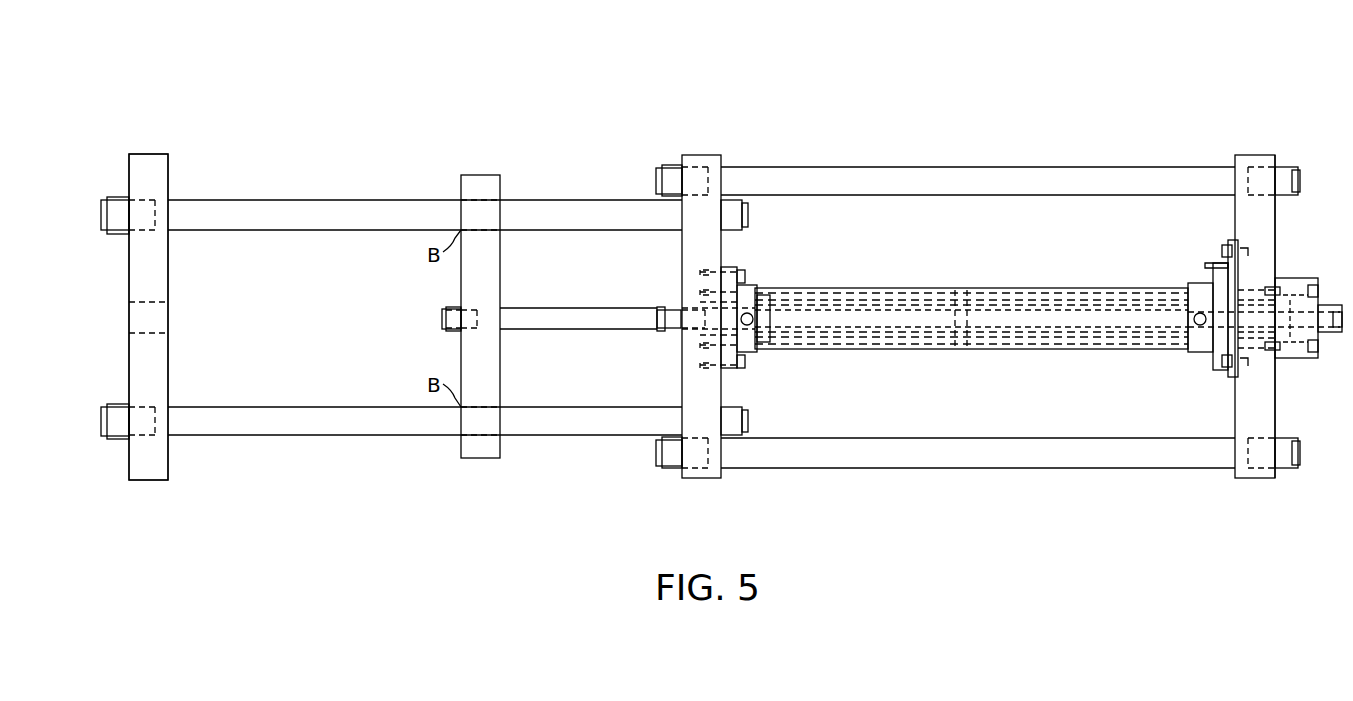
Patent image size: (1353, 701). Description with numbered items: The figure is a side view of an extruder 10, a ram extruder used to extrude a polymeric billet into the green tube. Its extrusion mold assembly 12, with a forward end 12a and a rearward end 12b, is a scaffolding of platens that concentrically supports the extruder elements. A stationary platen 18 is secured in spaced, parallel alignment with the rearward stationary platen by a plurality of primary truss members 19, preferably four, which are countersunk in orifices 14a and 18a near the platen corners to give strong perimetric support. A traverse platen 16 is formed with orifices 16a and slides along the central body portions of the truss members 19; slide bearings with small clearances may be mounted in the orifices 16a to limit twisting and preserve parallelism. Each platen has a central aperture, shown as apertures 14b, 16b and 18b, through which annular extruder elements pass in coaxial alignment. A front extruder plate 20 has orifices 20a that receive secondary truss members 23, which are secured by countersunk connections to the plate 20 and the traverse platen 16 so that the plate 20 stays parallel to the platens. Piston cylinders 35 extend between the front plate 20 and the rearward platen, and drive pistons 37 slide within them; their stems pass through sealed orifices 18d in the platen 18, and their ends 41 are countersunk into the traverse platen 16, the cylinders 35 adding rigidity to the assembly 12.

The extruder 10 is at (966, 72).
The extrusion mold assembly 12 is at (704, 153).
The forward end 12a is at (1277, 398).
The rearward end 12b is at (129, 366).
The orifices 14a is at (138, 212).
The central aperture 14b is at (168, 322).
The traverse platen 16 is at (152, 154).
The orifices 16a is at (500, 230).
The central aperture 16b is at (500, 330).
The stationary platen 18 is at (703, 478).
The orifices 18a is at (694, 176).
The central aperture 18b is at (706, 308).
The orifices 18d is at (684, 332).
The primary truss members 19 is at (312, 200).
The front extruder plate 20 is at (1273, 155).
The orifices 20a is at (1256, 178).
The secondary truss members 23 is at (946, 167).
The piston cylinders 35 is at (988, 288).
The drive pistons 37 is at (608, 330).
The ends 41 is at (500, 308).